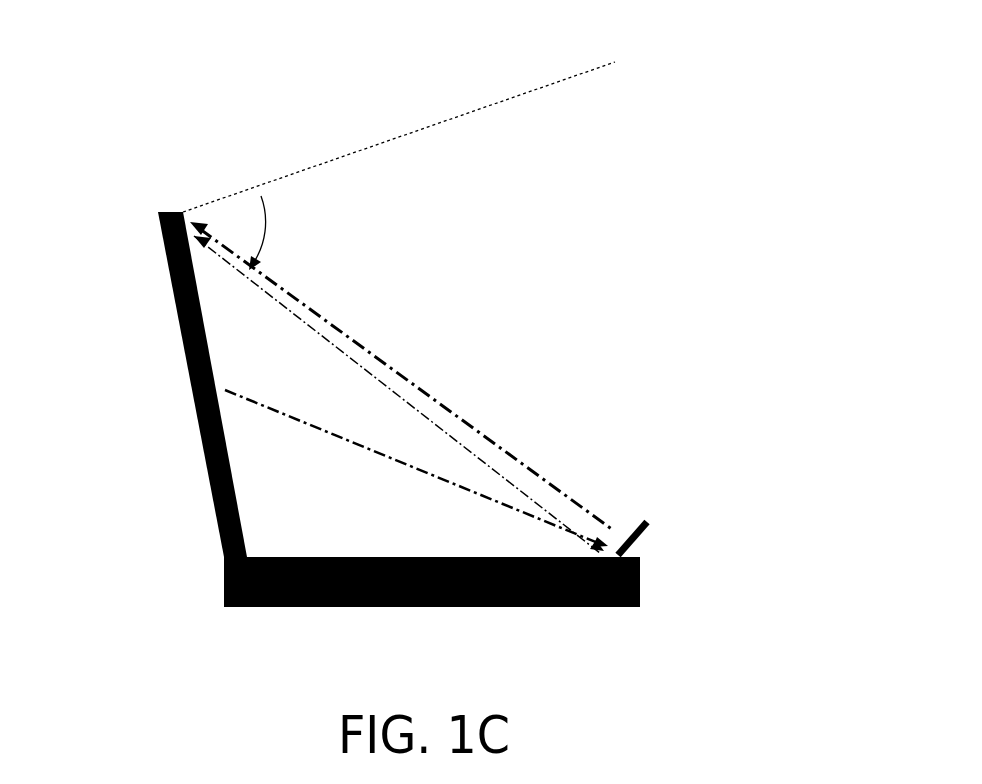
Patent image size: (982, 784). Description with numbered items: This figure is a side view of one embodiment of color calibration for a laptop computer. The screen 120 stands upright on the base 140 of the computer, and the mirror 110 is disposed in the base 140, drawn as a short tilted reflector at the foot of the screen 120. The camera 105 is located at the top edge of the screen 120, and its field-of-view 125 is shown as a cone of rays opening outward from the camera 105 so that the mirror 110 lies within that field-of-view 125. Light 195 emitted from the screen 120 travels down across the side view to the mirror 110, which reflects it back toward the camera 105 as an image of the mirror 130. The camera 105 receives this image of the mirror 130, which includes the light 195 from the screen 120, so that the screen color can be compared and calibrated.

The camera 105 is at (158, 212).
The mirror 110 is at (652, 542).
The screen 120 is at (237, 495).
The field of view 125 is at (327, 330).
The image of the mirror 130 is at (474, 403).
The base 140 is at (537, 550).
The light 195 is at (273, 420).